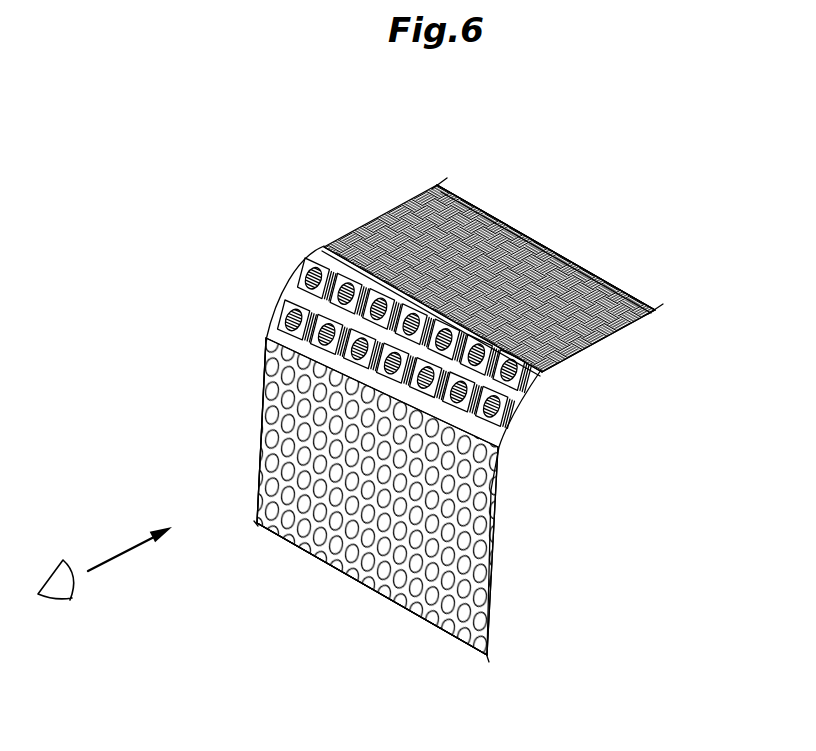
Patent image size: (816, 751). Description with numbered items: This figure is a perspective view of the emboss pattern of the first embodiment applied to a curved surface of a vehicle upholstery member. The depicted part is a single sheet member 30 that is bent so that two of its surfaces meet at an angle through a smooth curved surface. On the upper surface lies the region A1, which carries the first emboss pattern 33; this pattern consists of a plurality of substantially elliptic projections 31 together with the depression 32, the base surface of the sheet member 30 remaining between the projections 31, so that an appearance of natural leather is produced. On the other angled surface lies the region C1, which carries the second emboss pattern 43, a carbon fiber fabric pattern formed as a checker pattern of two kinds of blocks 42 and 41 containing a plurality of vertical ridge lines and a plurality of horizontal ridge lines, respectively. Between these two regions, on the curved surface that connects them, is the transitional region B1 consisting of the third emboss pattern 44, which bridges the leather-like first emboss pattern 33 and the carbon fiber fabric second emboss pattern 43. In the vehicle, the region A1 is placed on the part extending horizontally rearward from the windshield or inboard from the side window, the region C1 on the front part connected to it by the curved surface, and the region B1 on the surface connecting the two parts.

The sheet member 30 is at (334, 157).
The projections 31 is at (313, 663).
The depression 32 is at (414, 585).
The first emboss pattern 33 is at (377, 528).
The blocks 41 is at (540, 176).
The blocks 42 is at (520, 237).
The second emboss pattern 43 is at (489, 271).
The third emboss pattern 44 is at (381, 315).
The region of the first emboss pattern A1 is at (490, 222).
The transitional region B1 is at (308, 268).
The region of the second emboss pattern C1 is at (332, 538).